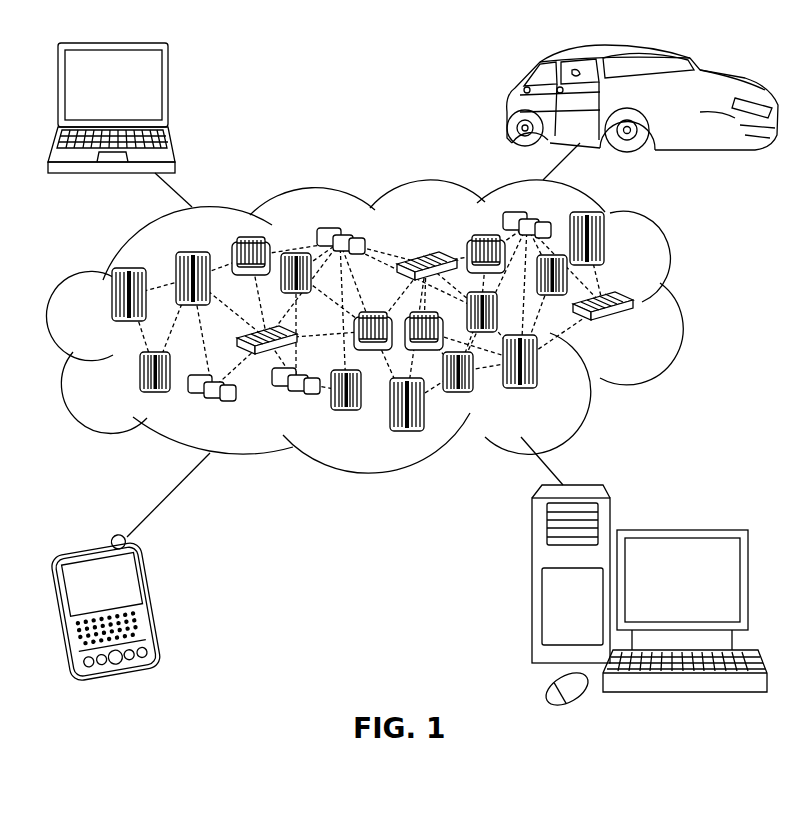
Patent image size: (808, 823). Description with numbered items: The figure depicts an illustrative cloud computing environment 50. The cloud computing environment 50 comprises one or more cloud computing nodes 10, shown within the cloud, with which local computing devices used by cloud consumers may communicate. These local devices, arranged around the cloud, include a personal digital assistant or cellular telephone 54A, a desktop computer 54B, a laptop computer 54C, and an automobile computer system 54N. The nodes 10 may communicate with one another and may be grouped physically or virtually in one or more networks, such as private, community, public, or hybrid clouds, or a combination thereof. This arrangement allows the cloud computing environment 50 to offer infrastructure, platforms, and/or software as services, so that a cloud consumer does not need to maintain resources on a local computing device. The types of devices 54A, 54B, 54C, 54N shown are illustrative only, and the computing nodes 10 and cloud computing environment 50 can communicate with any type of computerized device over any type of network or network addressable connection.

The cloud computing nodes 10 is at (640, 329).
The cloud computing environment 50 is at (683, 305).
The personal digital assistant (PDA) or cellular telephone 54A is at (163, 603).
The desktop computer 54B is at (680, 528).
The laptop computer 54C is at (168, 92).
The automobile computer system 54N is at (510, 102).